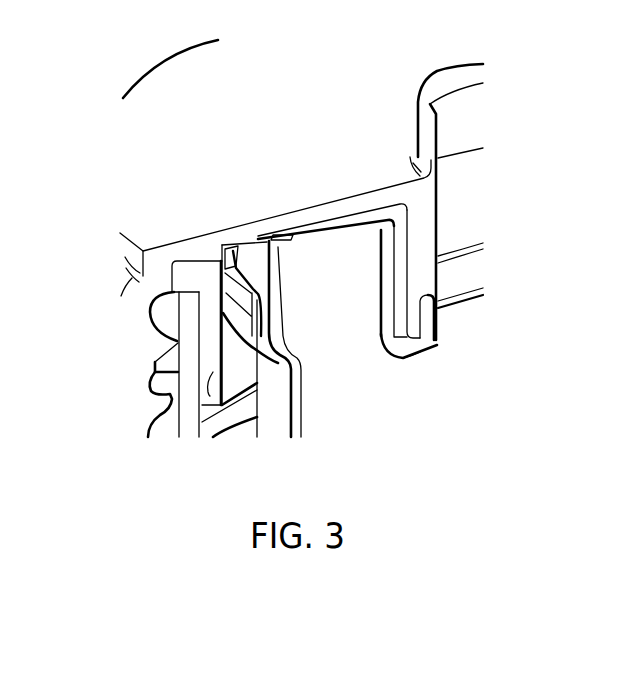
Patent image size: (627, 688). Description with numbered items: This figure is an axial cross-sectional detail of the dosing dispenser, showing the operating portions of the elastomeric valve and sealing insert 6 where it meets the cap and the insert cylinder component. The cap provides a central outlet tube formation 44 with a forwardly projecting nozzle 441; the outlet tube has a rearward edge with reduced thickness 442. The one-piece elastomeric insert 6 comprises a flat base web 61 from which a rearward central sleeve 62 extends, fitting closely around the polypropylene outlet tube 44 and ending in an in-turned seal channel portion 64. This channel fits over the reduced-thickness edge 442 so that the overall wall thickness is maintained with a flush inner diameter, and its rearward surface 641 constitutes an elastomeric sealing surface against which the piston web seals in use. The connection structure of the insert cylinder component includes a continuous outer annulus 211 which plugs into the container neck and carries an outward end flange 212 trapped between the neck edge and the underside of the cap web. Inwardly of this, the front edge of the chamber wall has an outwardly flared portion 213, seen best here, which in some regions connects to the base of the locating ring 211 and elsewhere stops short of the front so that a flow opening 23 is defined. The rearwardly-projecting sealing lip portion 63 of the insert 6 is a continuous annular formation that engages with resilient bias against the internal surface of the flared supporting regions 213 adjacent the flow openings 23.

The valve and sealing insert 6 is at (356, 291).
The flat base web 61 is at (358, 226).
The rearward central sleeve 62 is at (378, 308).
The sealing lip portion 63 is at (277, 287).
The in-turned seal channel portion 64 is at (413, 381).
The rearward surface 641 is at (396, 390).
The flow opening 23 is at (243, 260).
The outer annulus 211 is at (202, 408).
The outward end flange 212 is at (198, 267).
The outwardly flared portion 213 is at (275, 362).
The central outlet tube formation 44 is at (442, 230).
The nozzle 441 is at (423, 132).
The rearward edge with reduced thickness 442 is at (413, 321).